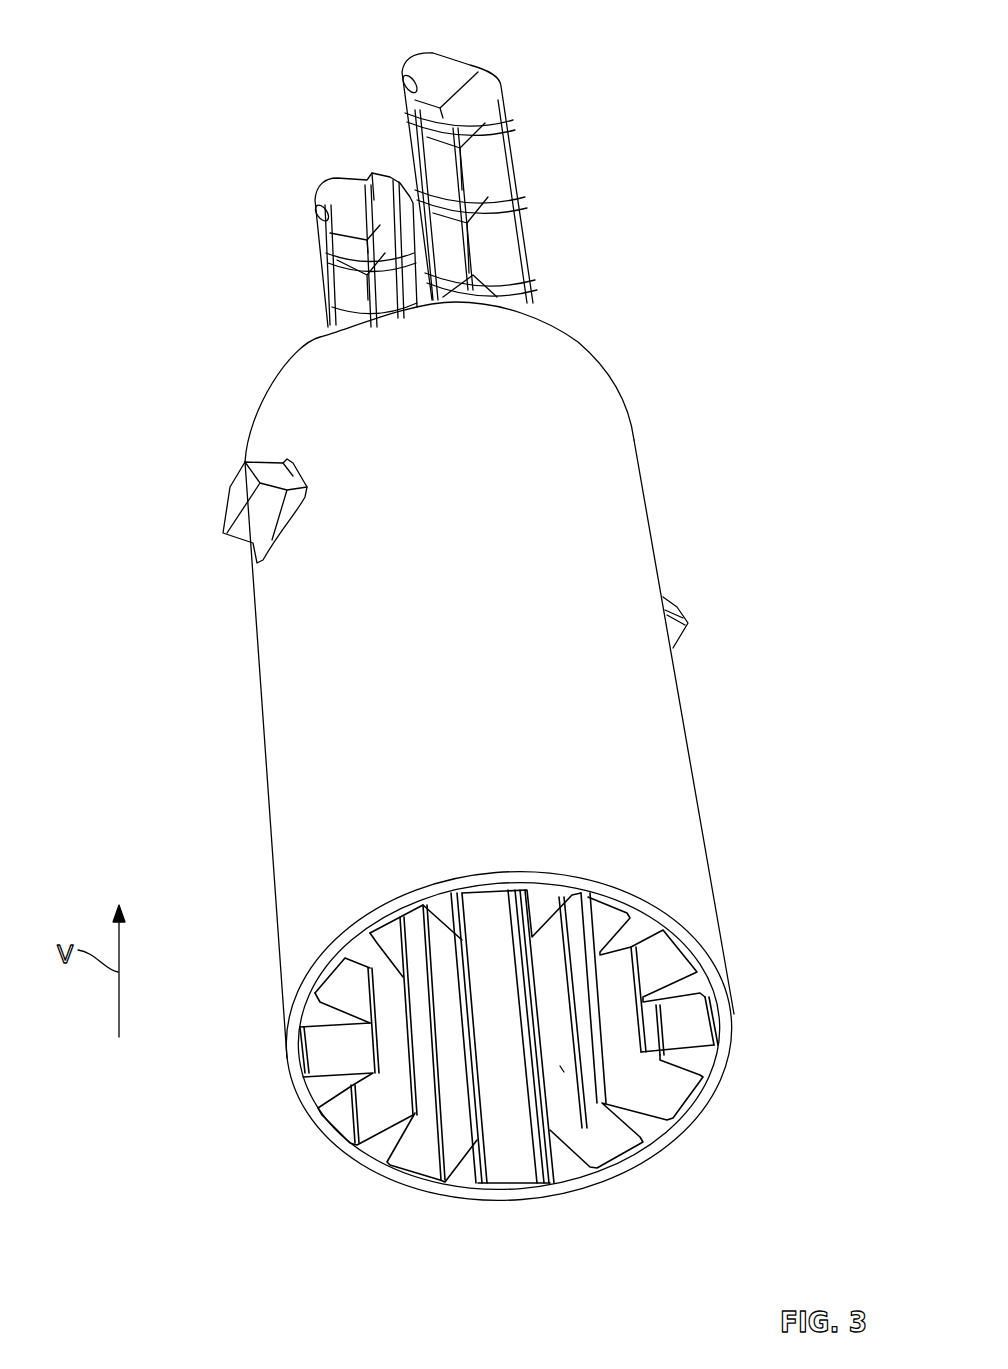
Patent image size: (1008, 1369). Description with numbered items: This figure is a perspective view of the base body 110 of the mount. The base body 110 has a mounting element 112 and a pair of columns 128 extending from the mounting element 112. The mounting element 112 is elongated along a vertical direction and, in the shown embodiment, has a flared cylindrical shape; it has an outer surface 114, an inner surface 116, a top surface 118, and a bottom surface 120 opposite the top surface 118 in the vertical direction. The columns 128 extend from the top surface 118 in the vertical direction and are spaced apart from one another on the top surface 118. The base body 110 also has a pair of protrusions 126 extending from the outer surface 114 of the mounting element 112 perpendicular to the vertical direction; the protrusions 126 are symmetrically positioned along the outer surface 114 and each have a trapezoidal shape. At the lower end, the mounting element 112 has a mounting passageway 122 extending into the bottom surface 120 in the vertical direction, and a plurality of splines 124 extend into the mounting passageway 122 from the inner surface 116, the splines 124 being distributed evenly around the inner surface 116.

The base body 110 is at (608, 112).
The mounting element 112 is at (259, 757).
The outer surface 114 is at (693, 790).
The inner surface 116 is at (716, 1022).
The top surface 118 is at (272, 378).
The bottom surface 120 is at (288, 1010).
The mounting passageway 122 is at (556, 1052).
The splines 124 is at (333, 1088).
The protrusions 126 is at (235, 493).
The columns 128 is at (417, 70).